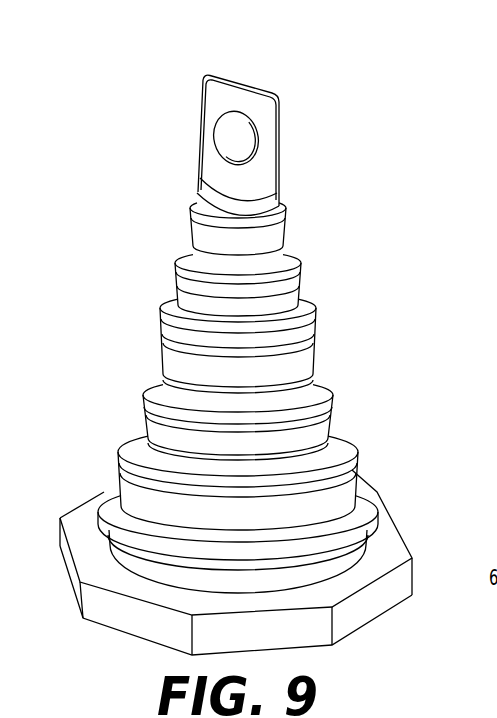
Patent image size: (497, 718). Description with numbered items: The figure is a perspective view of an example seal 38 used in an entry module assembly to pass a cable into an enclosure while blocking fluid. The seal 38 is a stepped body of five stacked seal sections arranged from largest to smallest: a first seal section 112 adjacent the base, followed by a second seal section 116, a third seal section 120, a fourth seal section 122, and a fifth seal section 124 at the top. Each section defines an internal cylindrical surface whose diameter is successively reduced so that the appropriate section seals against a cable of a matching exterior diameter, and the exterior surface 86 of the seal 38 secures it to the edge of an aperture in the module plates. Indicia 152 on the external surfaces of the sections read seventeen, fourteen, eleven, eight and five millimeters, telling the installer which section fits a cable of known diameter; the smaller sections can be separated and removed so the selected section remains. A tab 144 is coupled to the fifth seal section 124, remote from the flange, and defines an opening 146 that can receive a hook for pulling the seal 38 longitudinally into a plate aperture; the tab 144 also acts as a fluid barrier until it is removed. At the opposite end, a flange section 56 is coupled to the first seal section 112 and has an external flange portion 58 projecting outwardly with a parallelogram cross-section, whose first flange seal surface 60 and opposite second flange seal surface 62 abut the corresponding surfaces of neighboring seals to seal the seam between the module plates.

The seal 38 is at (225, 120).
The tab 144 is at (282, 110).
The opening 146 is at (238, 128).
The fifth seal section 124 is at (283, 230).
The exterior surface 86 is at (229, 337).
The fourth seal section 122 is at (305, 293).
The third seal section 120 is at (312, 352).
The second seal section 116 is at (326, 413).
The first seal section 112 is at (343, 478).
The indicia 152 is at (191, 228).
The flange section 56 is at (253, 531).
The external flange portion 58 is at (393, 522).
The second flange seal surface 62 is at (407, 538).
The first flange seal surface 60 is at (78, 583).